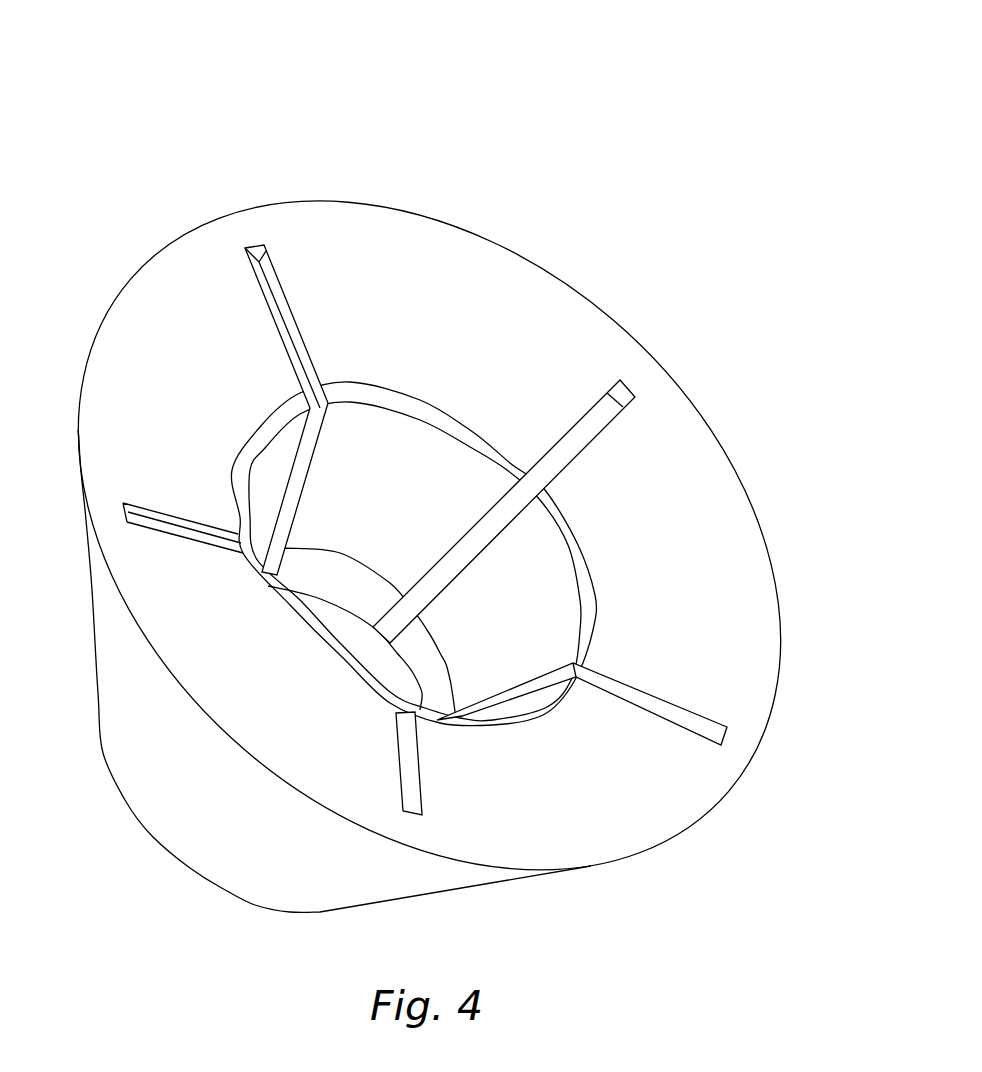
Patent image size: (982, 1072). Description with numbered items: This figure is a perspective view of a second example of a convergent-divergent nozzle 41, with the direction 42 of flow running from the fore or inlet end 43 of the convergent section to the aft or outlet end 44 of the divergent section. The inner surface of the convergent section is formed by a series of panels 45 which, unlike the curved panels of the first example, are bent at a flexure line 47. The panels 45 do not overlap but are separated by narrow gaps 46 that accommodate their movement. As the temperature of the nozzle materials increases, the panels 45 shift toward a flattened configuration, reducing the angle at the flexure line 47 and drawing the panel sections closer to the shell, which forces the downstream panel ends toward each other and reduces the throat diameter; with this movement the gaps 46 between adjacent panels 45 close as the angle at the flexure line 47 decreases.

The convergent-divergent nozzle 41 is at (124, 122).
The direction of flow 42 is at (352, 625).
The fore or inlet end 43 is at (692, 405).
The aft or outlet end 44 is at (152, 838).
The panels 45 is at (700, 478).
The gaps 46 is at (677, 712).
The flexure line 47 is at (595, 597).